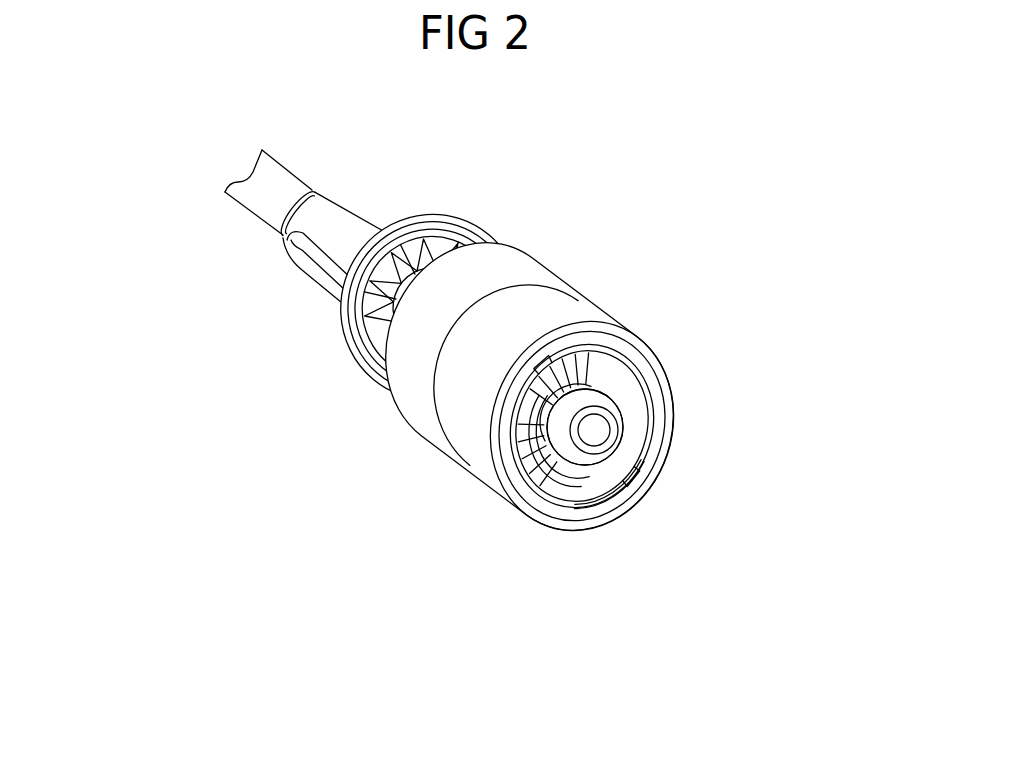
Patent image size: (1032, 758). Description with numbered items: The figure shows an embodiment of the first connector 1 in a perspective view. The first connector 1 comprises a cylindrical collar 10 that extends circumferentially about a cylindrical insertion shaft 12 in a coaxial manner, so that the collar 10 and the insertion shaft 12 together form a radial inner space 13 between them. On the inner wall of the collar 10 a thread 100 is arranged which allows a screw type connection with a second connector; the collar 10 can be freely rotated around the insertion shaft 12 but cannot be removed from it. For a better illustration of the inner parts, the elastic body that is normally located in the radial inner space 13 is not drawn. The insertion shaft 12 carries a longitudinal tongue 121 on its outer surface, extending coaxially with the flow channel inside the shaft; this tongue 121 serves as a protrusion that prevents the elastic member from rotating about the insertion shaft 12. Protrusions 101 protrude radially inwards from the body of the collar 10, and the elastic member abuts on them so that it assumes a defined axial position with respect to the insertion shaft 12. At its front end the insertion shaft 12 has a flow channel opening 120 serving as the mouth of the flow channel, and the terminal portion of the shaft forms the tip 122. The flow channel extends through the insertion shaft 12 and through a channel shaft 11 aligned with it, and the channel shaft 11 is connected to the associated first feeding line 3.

The first connector 1 is at (551, 234).
The first feeding line 3 is at (282, 173).
The collar 10 is at (470, 432).
The channel shaft 11 is at (282, 243).
The insertion shaft 12 is at (603, 407).
The radial inner space 13 is at (633, 463).
The thread 100 is at (575, 472).
The protrusions 101 is at (647, 455).
The flow channel opening 120 is at (598, 435).
The longitudinal tongue 121 is at (565, 382).
The tip 122 is at (587, 400).